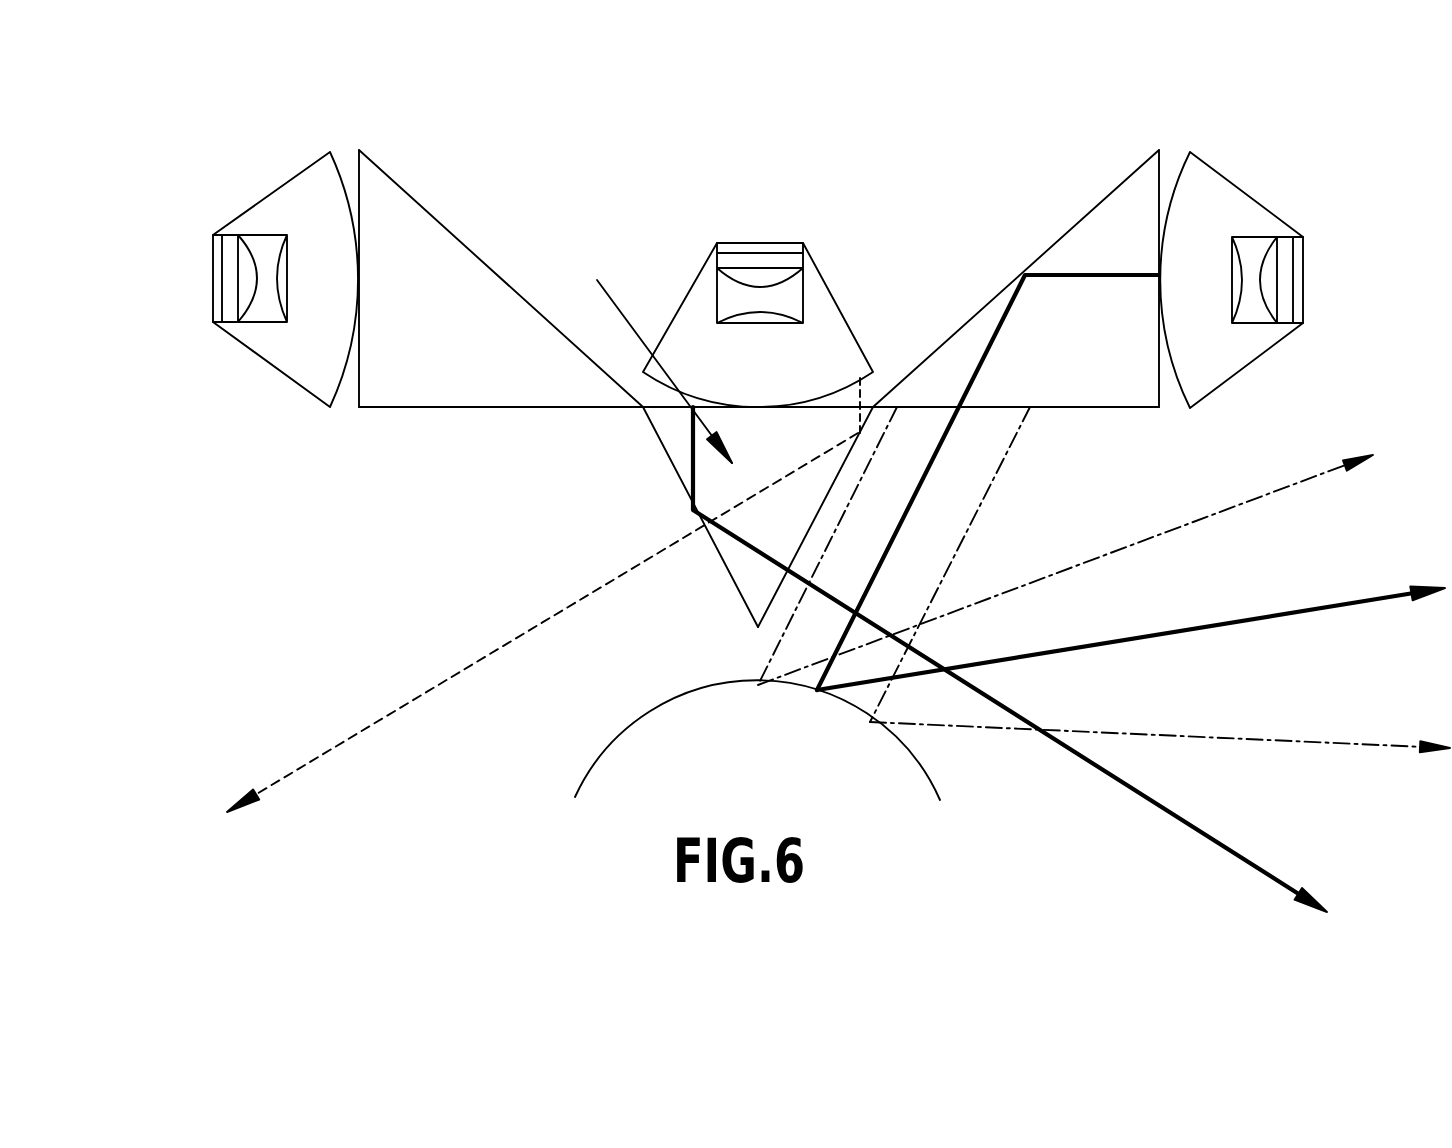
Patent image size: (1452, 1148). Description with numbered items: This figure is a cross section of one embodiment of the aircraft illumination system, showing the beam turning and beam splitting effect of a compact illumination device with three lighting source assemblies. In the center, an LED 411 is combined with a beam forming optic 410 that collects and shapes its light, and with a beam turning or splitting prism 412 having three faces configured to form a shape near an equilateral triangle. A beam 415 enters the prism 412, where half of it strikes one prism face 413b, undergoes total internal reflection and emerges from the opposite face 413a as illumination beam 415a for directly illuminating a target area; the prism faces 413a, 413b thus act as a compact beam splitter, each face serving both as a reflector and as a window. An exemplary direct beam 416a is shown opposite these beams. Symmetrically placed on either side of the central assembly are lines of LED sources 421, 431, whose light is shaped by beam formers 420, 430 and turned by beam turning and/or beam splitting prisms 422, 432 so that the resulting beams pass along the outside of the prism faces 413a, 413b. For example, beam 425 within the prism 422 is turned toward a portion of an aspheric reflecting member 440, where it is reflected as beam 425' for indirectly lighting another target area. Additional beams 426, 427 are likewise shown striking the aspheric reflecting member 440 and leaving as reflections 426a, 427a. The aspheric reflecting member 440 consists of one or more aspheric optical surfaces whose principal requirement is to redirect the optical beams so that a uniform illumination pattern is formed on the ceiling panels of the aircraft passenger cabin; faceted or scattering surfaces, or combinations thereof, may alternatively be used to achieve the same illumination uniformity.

The beam forming optic 410 is at (830, 292).
The LED 411 is at (780, 243).
The beam turning or splitting prism 412 is at (654, 355).
The prism face 413a is at (862, 445).
The prism face 413b is at (657, 447).
The beam 415 is at (694, 483).
The illumination beam 415a is at (1283, 881).
The direct beam 416a is at (380, 720).
The beam forming optic 420 is at (1263, 203).
The LED source 421 is at (1303, 282).
The beam turning and/or beam splitting prism 422 is at (1103, 199).
The beam 425 is at (988, 458).
The reflected beam 425' is at (1131, 617).
The beam 426 is at (853, 500).
The reflection 426a is at (1208, 515).
The beam 427 is at (950, 563).
The reflection 427a is at (1252, 740).
The beam forming optic 430 is at (257, 202).
The LED source 431 is at (212, 283).
The beam turning and/or beam splitting prism 432 is at (413, 198).
The aspheric reflecting member 440 is at (723, 688).